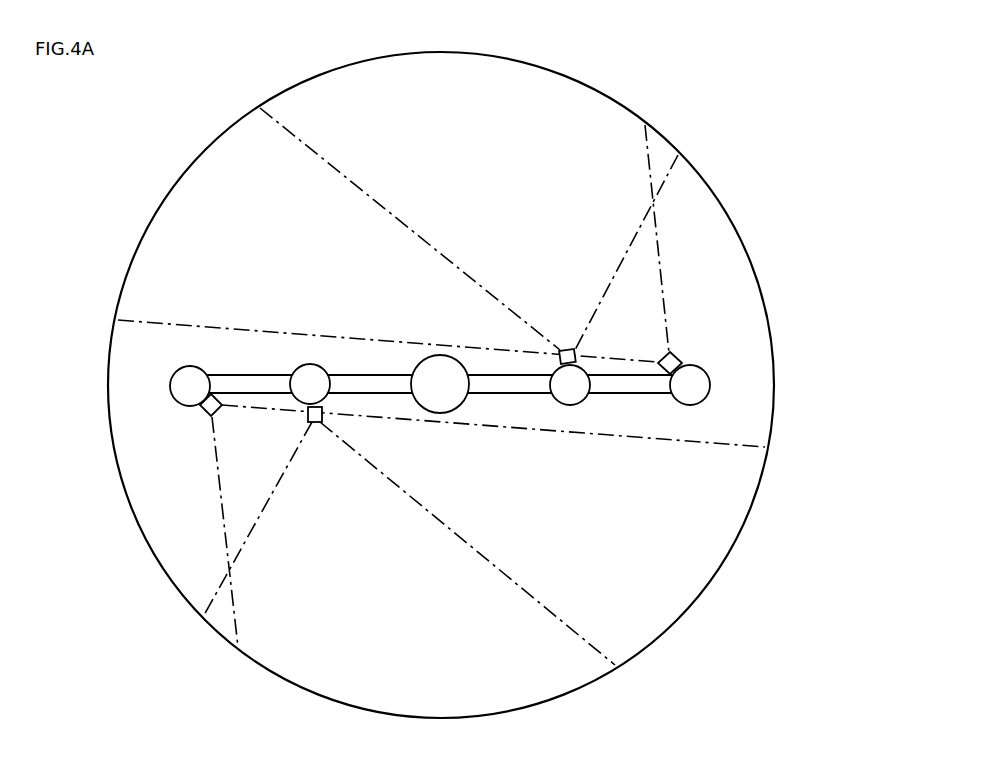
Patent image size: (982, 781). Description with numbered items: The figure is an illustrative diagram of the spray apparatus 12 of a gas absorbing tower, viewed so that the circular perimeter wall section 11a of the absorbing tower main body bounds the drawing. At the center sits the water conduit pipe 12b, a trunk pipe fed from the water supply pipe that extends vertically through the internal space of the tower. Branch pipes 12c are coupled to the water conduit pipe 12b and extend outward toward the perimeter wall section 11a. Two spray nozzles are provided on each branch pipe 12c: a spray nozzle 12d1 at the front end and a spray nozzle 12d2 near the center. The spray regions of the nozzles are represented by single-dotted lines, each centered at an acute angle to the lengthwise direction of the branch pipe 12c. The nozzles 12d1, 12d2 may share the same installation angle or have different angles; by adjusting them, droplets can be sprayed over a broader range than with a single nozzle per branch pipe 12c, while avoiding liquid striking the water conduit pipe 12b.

The perimeter wall section 11a is at (645, 125).
The spray apparatus 12 is at (438, 524).
The water conduit pipe 12b is at (442, 395).
The branch pipe 12c is at (625, 382).
The spray nozzle 12d1 is at (682, 360).
The spray nozzle 12d2 is at (563, 350).